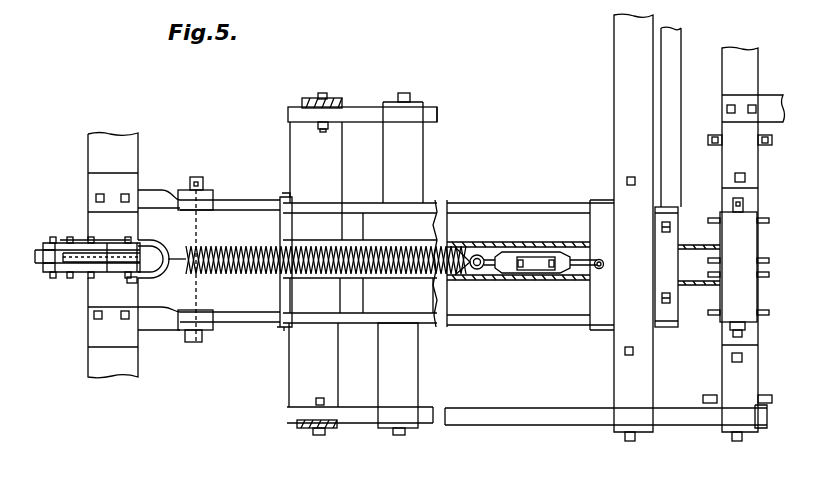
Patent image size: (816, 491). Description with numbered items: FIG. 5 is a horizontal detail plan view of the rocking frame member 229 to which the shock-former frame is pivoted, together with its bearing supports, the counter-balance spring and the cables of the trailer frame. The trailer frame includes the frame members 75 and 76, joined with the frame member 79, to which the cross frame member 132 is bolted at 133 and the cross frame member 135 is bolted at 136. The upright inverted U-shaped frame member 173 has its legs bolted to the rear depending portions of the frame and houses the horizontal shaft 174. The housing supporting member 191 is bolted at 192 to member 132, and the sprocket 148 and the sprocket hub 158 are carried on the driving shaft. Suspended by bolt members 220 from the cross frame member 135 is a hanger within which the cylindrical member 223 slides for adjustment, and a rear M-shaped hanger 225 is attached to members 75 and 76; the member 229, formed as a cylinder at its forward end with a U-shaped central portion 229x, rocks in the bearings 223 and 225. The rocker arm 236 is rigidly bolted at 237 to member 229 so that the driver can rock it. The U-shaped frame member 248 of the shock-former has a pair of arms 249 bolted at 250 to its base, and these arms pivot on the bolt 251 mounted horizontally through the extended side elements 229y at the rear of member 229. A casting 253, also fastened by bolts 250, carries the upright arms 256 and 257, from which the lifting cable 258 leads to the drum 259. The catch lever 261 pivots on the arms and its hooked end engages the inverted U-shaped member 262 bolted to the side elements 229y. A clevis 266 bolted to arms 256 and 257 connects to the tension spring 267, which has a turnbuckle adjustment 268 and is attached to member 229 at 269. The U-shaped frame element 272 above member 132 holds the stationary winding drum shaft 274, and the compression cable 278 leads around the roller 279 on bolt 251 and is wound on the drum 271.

The frame member 75 is at (352, 418).
The frame member 76 is at (362, 107).
The frame member 79 is at (313, 365).
The cross frame member 132 is at (740, 239).
The bolt 133 is at (737, 442).
The cross frame member 135 is at (633, 223).
The bolt 136 is at (630, 442).
The sprocket 148 is at (781, 392).
The sprocket hub 158 is at (773, 141).
The upright inverted U-shaped frame member 173 is at (340, 98).
The horizontal shaft 174 is at (322, 93).
The housing supporting member 191 is at (783, 96).
The bolt 192 is at (727, 109).
The bolt members 220 is at (627, 183).
The cylindrical member 223 is at (664, 327).
The rear M-shaped hanger 225 is at (398, 379).
The rocking frame member 229 is at (602, 265).
The U-shaped central portion 229x is at (360, 300).
The extended side elements 229y is at (222, 200).
The rocker arm 236 is at (673, 53).
The bolt 237 is at (669, 223).
The U-shaped frame member 248 is at (117, 377).
The arm members 249 is at (150, 192).
The bolts 250 is at (95, 198).
The bolt 251 is at (201, 177).
The casting 253 is at (86, 283).
The upright arm 256 is at (57, 240).
The upright arm 257 is at (50, 274).
The lifting cable 258 is at (530, 247).
The drum 259 is at (778, 254).
The catch lever 261 is at (41, 250).
The inverted U-shaped member 262 is at (288, 236).
The clevis 266 is at (182, 233).
The tension spring 267 is at (129, 283).
The turnbuckle adjustment 268 is at (516, 275).
The spring attachment 269 is at (599, 259).
The drum 271 is at (778, 308).
The U-shaped frame element 272 is at (738, 267).
The winding drum shaft 274 is at (743, 204).
The compression cable 278 is at (688, 285).
The roller 279 is at (198, 271).